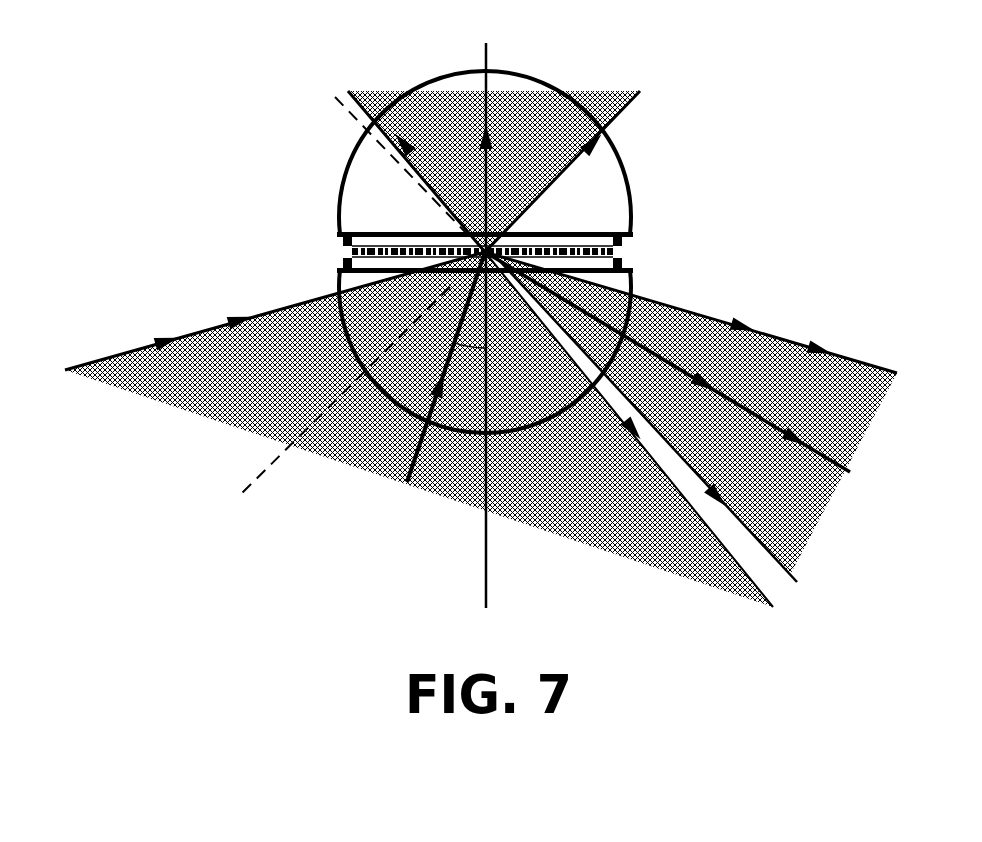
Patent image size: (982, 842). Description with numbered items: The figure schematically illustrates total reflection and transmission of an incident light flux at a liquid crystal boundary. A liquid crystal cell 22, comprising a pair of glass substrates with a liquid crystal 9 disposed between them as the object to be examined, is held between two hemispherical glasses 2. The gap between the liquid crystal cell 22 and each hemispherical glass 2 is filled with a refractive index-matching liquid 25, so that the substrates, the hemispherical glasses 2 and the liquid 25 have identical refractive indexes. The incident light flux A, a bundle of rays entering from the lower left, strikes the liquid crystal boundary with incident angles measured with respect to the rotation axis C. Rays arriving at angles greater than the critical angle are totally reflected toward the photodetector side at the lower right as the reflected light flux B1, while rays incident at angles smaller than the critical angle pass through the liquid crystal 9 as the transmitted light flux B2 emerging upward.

The hemispherical glass 2 is at (628, 199).
The liquid crystal cell 22 is at (367, 243).
The refractive index-matching liquid 25 is at (350, 262).
The liquid crystal 9 is at (617, 252).
The reflected light flux B1 is at (813, 377).
The transmitted light flux B2 is at (543, 127).
The rotation axis C is at (488, 60).
The incident light flux A is at (400, 476).